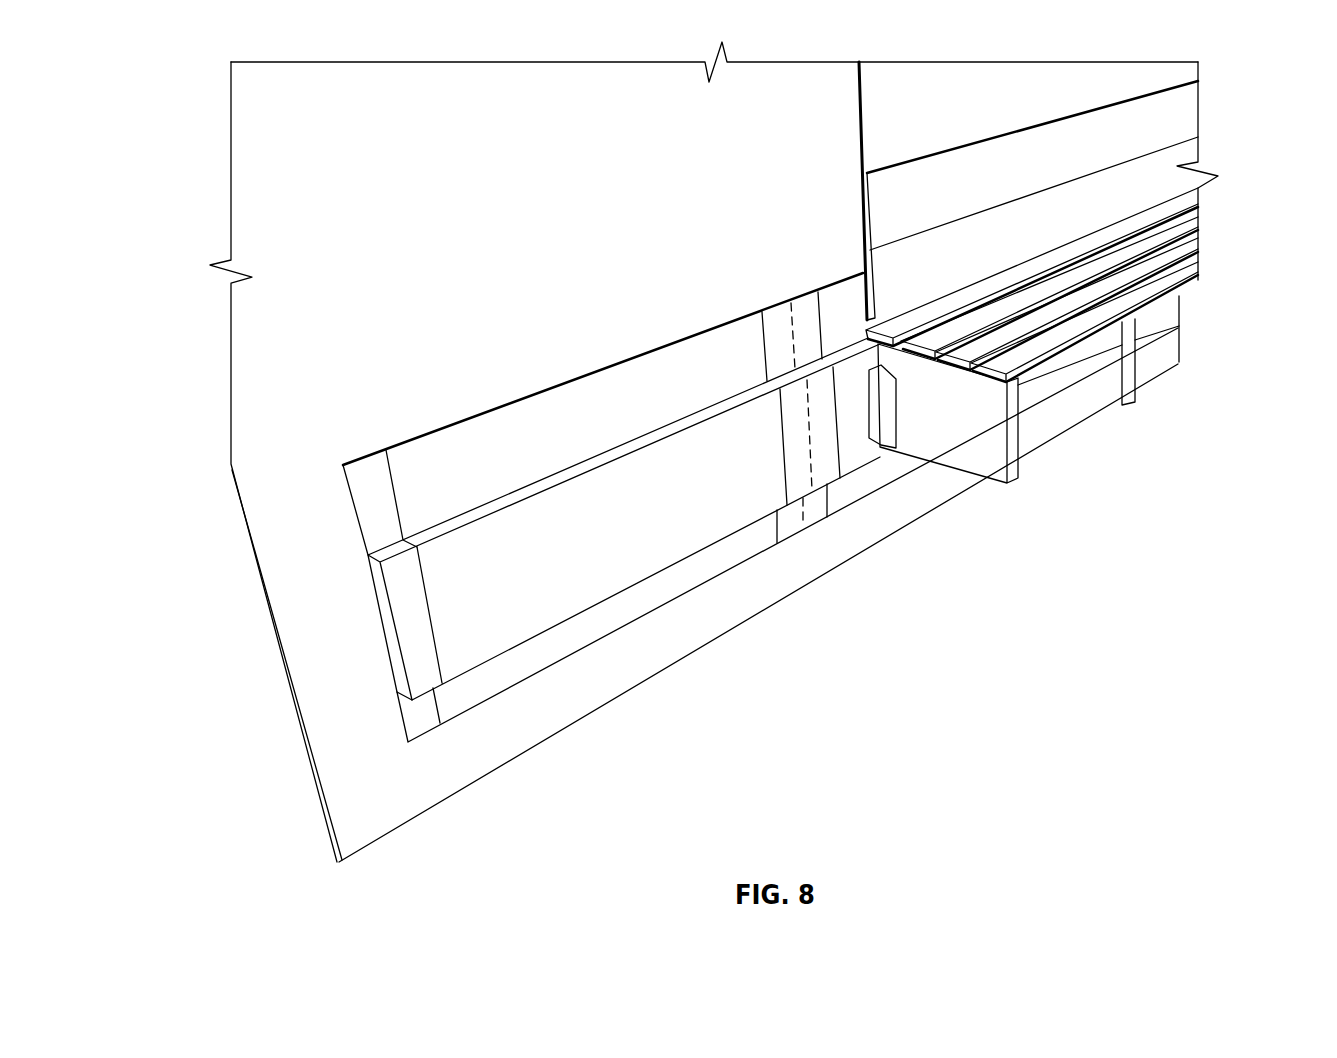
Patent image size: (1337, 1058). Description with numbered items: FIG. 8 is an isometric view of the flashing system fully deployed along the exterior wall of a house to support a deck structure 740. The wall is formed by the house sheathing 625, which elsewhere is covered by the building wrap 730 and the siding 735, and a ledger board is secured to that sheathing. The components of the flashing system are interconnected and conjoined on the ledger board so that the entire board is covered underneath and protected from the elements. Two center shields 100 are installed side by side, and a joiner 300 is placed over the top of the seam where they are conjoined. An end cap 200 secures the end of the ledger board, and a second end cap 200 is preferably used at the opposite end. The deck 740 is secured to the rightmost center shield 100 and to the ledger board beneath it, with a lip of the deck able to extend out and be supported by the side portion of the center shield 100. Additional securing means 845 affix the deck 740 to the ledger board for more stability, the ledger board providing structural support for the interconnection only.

The house sheathing 625 is at (260, 219).
The building wrap 730 is at (1183, 77).
The siding 735 is at (1177, 158).
The deck structure 740 is at (1190, 243).
The center shield 100 is at (1167, 312).
The securing means 845 is at (900, 408).
The joiner 300 is at (790, 523).
The end cap 200 is at (420, 722).